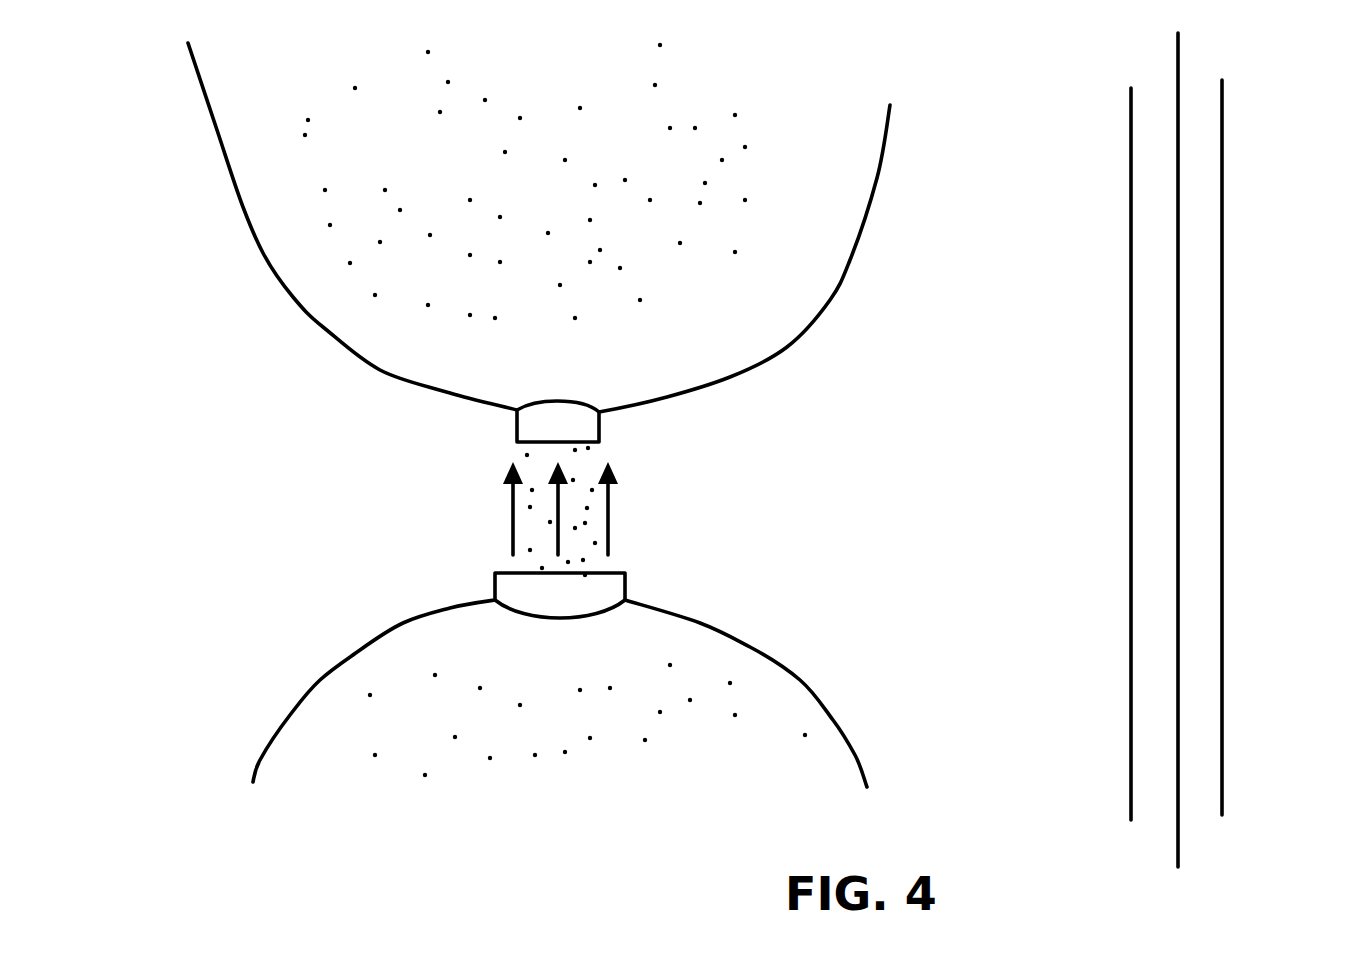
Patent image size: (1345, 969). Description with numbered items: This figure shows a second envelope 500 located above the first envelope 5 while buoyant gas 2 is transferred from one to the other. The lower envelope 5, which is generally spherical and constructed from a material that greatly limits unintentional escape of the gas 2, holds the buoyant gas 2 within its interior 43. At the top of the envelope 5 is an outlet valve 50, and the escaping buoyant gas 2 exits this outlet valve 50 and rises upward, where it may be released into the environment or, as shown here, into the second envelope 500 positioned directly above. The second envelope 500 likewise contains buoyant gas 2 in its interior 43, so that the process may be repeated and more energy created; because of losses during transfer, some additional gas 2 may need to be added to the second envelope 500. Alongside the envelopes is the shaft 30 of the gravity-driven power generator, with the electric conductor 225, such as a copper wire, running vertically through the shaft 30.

The buoyant gas 2 is at (752, 197).
The envelope 5 is at (260, 760).
The shaft 30 is at (1224, 405).
The interior 43 is at (740, 248).
The outlet valve 50 is at (630, 578).
The electric conductor 225 is at (1177, 193).
The second envelope 500 is at (262, 255).